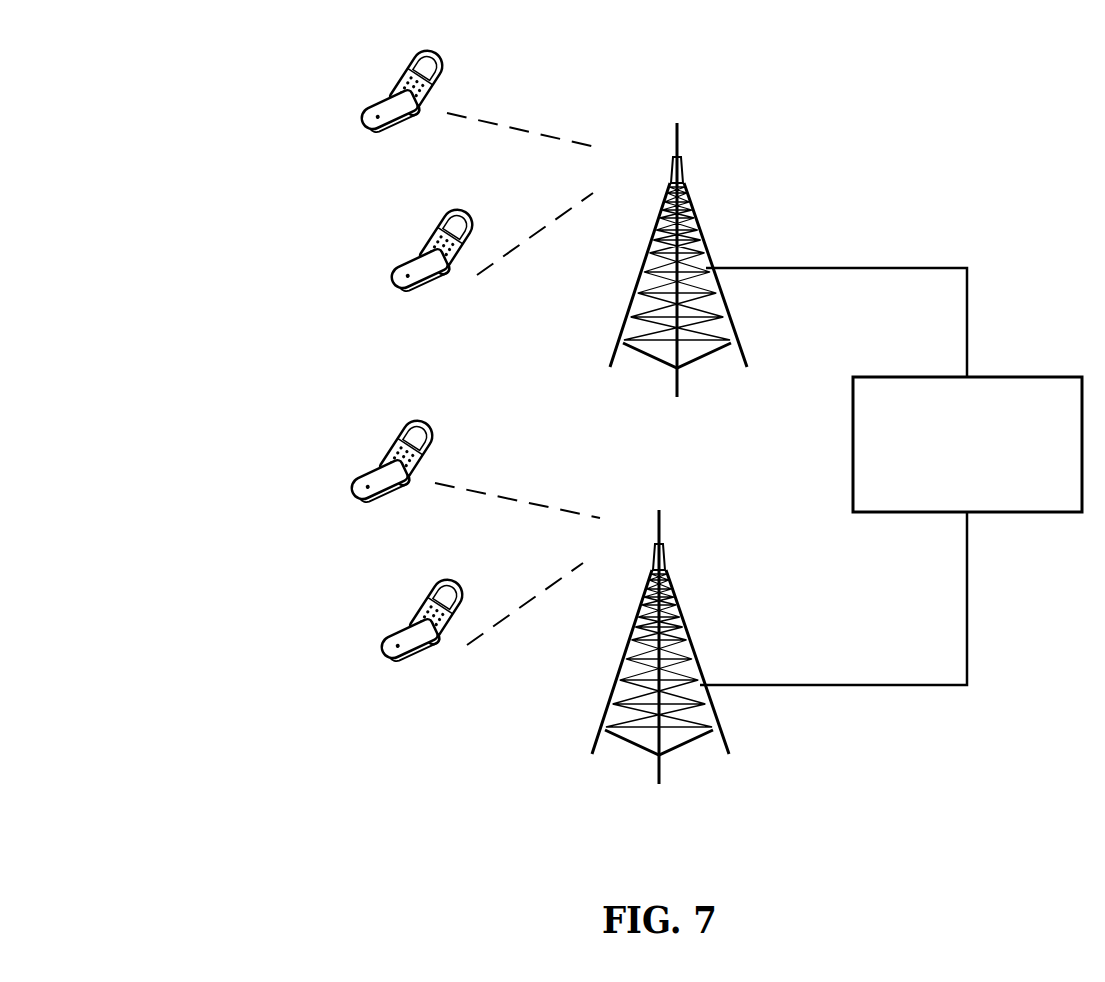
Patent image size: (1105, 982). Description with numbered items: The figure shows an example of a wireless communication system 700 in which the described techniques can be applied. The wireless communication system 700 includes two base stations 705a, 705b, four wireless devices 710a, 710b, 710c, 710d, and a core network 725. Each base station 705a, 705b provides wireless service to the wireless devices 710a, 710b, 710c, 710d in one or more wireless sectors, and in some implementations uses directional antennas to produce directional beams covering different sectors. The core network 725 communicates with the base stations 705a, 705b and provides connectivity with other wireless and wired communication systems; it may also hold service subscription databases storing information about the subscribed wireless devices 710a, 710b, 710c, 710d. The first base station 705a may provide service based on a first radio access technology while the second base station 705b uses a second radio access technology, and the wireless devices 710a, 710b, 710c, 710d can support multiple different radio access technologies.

The wireless communication system 700 is at (228, 176).
The base station 705a is at (699, 266).
The base station 705b is at (682, 657).
The wireless device 710a is at (479, 86).
The wireless device 710b is at (490, 230).
The wireless device 710c is at (474, 452).
The wireless device 710d is at (480, 605).
The core network 725 is at (967, 423).